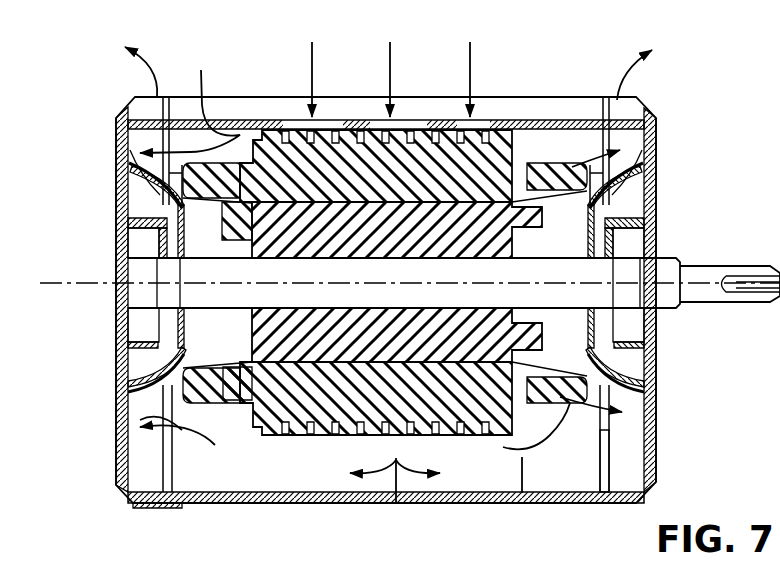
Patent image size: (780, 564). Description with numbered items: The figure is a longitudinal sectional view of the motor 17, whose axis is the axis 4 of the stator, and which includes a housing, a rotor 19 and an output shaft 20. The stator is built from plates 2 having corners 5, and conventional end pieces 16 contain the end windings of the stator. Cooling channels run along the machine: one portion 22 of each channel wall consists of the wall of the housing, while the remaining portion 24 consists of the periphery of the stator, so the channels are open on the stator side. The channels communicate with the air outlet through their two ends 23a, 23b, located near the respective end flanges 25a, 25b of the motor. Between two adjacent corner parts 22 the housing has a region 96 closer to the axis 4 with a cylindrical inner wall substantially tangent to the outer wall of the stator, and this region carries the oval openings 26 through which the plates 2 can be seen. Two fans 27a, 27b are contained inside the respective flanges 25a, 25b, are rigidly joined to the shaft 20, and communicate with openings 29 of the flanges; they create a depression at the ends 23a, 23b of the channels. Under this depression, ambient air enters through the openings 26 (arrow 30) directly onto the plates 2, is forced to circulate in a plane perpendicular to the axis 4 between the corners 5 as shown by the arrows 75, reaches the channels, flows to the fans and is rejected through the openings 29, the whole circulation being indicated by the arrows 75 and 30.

The plates 2 is at (483, 177).
The axis 4 is at (90, 283).
The corners 5 is at (283, 130).
The end pieces 16 is at (560, 460).
The motor 17 is at (167, 522).
The rotor 19 is at (333, 432).
The output shaft 20 is at (697, 266).
The portion of the wall of the channels 22 is at (237, 500).
The end of the channels 23a is at (115, 152).
The end of the channels 23b is at (640, 160).
The remaining portion of the channel wall 24 is at (287, 436).
The end flange 25a is at (125, 205).
The end flange 25b is at (657, 178).
The oval openings 26 is at (415, 130).
The fan 27a is at (150, 400).
The fan 27b is at (658, 382).
The openings of the flanges 29 is at (620, 100).
The arrow 30 is at (312, 43).
The arrows 75 is at (398, 502).
The region of the housing 96 is at (577, 122).